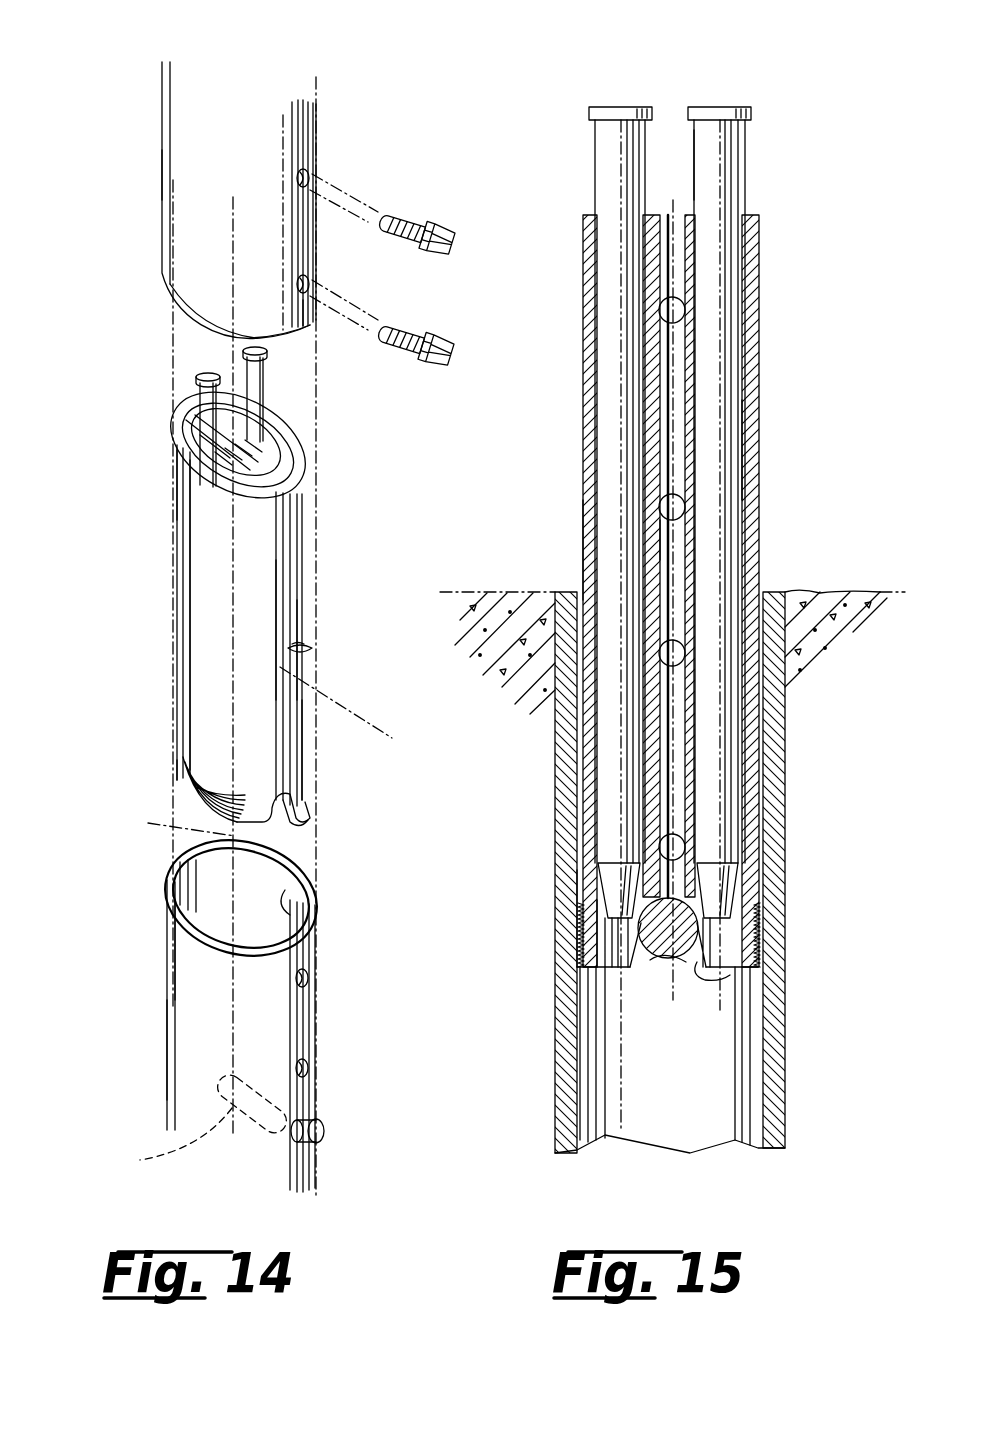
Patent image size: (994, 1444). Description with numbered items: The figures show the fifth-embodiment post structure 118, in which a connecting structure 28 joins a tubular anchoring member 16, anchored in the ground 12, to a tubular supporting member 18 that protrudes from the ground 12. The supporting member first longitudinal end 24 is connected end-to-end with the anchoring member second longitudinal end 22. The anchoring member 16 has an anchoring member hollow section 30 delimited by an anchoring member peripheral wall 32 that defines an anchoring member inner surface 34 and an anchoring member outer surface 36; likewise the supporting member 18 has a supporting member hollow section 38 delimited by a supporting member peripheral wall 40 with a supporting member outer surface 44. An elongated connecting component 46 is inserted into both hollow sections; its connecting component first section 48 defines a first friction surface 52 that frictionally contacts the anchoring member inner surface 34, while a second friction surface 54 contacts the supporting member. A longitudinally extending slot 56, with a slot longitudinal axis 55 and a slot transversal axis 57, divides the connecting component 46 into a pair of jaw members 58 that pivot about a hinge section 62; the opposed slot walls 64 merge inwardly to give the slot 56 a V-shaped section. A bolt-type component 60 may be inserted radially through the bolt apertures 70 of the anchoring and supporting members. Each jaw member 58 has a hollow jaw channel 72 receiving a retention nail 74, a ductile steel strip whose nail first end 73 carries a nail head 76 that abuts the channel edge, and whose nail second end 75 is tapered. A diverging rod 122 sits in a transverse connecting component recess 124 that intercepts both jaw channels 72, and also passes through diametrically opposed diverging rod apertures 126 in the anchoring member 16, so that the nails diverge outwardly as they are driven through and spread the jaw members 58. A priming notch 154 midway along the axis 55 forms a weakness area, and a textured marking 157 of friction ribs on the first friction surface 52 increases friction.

In FIG. 15, the ground 12 is at (838, 628).
In FIG. 14, the anchoring member 16 is at (200, 1040).
In FIG. 15, the anchoring member 16 is at (810, 1110).
In FIG. 14, the supporting member 18 is at (205, 155).
In FIG. 14, the anchoring member second longitudinal end 22 is at (135, 1026).
In FIG. 14, the supporting member first longitudinal end 24 is at (145, 258).
In FIG. 15, the connecting structure 28 is at (572, 578).
In FIG. 14, the anchoring member hollow section 30 is at (258, 935).
In FIG. 15, the anchoring member peripheral wall 32 is at (565, 868).
In FIG. 14, the anchoring member inner surface 34 is at (300, 888).
In FIG. 15, the anchoring member inner surface 34 is at (755, 1032).
In FIG. 14, the anchoring member outer surface 36 is at (190, 936).
In FIG. 14, the supporting member hollow section 38 is at (200, 330).
In FIG. 14, the supporting member peripheral wall 40 is at (308, 322).
In FIG. 14, the supporting member outer surface 44 is at (195, 285).
In FIG. 14, the connecting component 46 is at (145, 643).
In FIG. 15, the connecting component 46 is at (572, 440).
In FIG. 14, the connecting component first section 48 is at (318, 749).
In FIG. 14, the first friction surface 52 is at (188, 768).
In FIG. 15, the first friction surface 52 is at (583, 775).
In FIG. 14, the second friction surface 54 is at (205, 525).
In FIG. 15, the second friction surface 54 is at (760, 357).
In FIG. 14, the slot longitudinal axis 55 is at (165, 818).
In FIG. 14, the slot 56 is at (290, 606).
In FIG. 15, the slot 56 is at (672, 420).
In FIG. 14, the slot transversal axis 57 is at (367, 718).
In FIG. 14, the jaw members 58 is at (250, 548).
In FIG. 14, the bolt-type component 60 is at (440, 215).
In FIG. 14, the hinge section 62 is at (208, 414).
In FIG. 15, the hinge section 62 is at (660, 215).
In FIG. 15, the slot walls 64 is at (676, 528).
In FIG. 14, the bolt aperture 70 is at (312, 185).
In FIG. 15, the bolt aperture 70 is at (690, 300).
In FIG. 14, the jaw channel 72 is at (292, 448).
In FIG. 15, the nail first end 73 is at (757, 155).
In FIG. 14, the retention nail 74 is at (258, 385).
In FIG. 15, the retention nail 74 is at (605, 172).
In FIG. 15, the nail second end 75 is at (742, 887).
In FIG. 14, the nail head 76 is at (248, 352).
In FIG. 15, the nail head 76 is at (706, 107).
In FIG. 14, the post structure 118 is at (145, 470).
In FIG. 14, the diverging rod 122 is at (165, 1152).
In FIG. 15, the diverging rod 122 is at (638, 940).
In FIG. 14, the connecting component recess 124 is at (300, 820).
In FIG. 15, the connecting component recess 124 is at (730, 975).
In FIG. 14, the diverging rod apertures 126 is at (310, 1122).
In FIG. 15, the diverging rod apertures 126 is at (668, 960).
In FIG. 14, the priming notch 154 is at (312, 652).
In FIG. 14, the textured marking 157 is at (188, 780).
In FIG. 15, the textured marking 157 is at (762, 906).